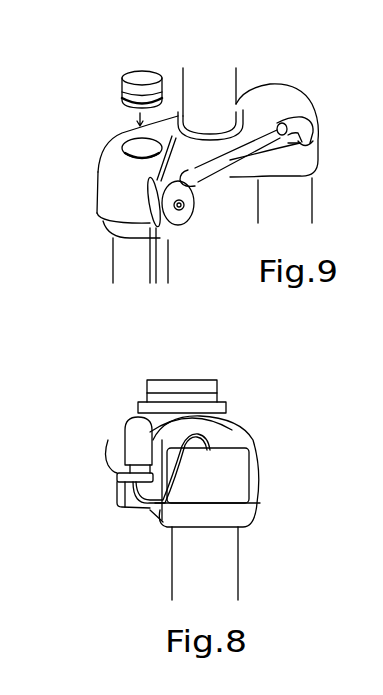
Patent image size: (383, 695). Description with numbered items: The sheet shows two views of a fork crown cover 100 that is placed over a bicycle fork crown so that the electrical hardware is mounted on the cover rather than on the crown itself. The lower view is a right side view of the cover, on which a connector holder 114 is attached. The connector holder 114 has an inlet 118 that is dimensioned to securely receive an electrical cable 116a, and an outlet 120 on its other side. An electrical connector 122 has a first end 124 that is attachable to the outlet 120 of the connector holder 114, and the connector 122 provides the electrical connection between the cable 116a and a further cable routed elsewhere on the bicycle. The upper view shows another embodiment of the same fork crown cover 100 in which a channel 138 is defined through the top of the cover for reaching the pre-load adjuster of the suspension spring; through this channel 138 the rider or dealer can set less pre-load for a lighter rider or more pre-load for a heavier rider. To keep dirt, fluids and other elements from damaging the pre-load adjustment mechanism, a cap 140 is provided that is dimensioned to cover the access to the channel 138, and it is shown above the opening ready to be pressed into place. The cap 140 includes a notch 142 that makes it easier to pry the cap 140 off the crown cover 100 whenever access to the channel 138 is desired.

In FIG. 9, the fork crown cover 100 is at (293, 100).
In FIG. 8, the fork crown cover 100 is at (263, 493).
In FIG. 8, the connector holder 114 is at (115, 503).
In FIG. 8, the electrical cable 116a is at (230, 420).
In FIG. 8, the inlet 118 is at (127, 475).
In FIG. 8, the outlet 120 is at (128, 470).
In FIG. 8, the electrical connector 122 is at (135, 430).
In FIG. 8, the first end 124 is at (150, 452).
In FIG. 9, the channel 138 is at (125, 148).
In FIG. 9, the cap 140 is at (133, 78).
In FIG. 9, the notch 142 is at (157, 72).